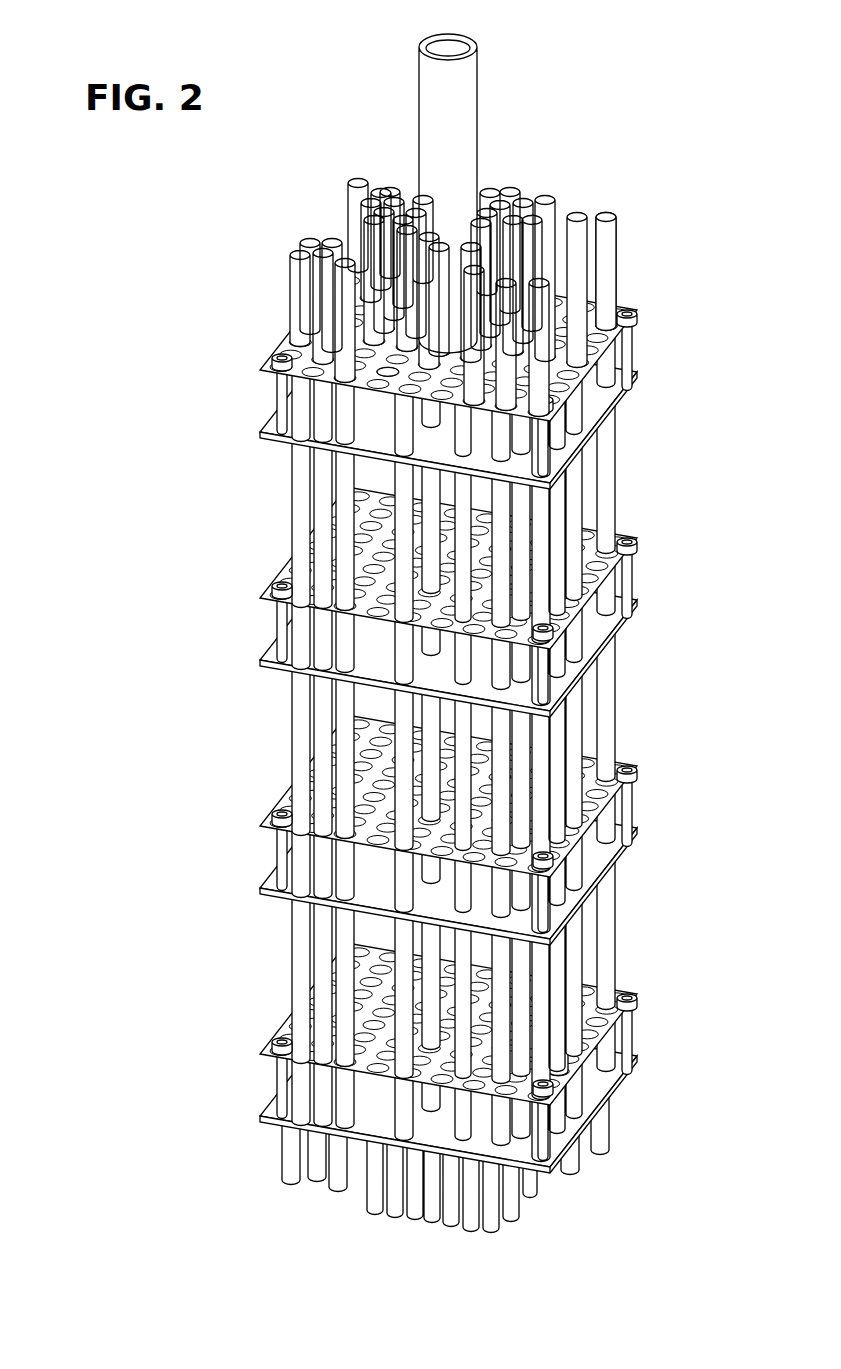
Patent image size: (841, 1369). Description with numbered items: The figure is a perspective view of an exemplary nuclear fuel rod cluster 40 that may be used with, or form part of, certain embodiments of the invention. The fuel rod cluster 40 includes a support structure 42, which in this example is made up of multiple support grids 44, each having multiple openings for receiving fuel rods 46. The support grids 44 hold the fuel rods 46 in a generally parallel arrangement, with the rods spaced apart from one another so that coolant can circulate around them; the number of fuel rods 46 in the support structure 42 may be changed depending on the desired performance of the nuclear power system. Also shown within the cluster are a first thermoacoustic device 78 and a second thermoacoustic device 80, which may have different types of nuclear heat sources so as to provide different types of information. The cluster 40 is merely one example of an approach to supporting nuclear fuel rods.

The fuel rod cluster 40 is at (479, 633).
The support structure 42 is at (624, 400).
The support grid 44 is at (611, 571).
The fuel rod 46 is at (609, 250).
The first thermoacoustic device 78 is at (405, 372).
The second thermoacoustic device 80 is at (567, 1035).